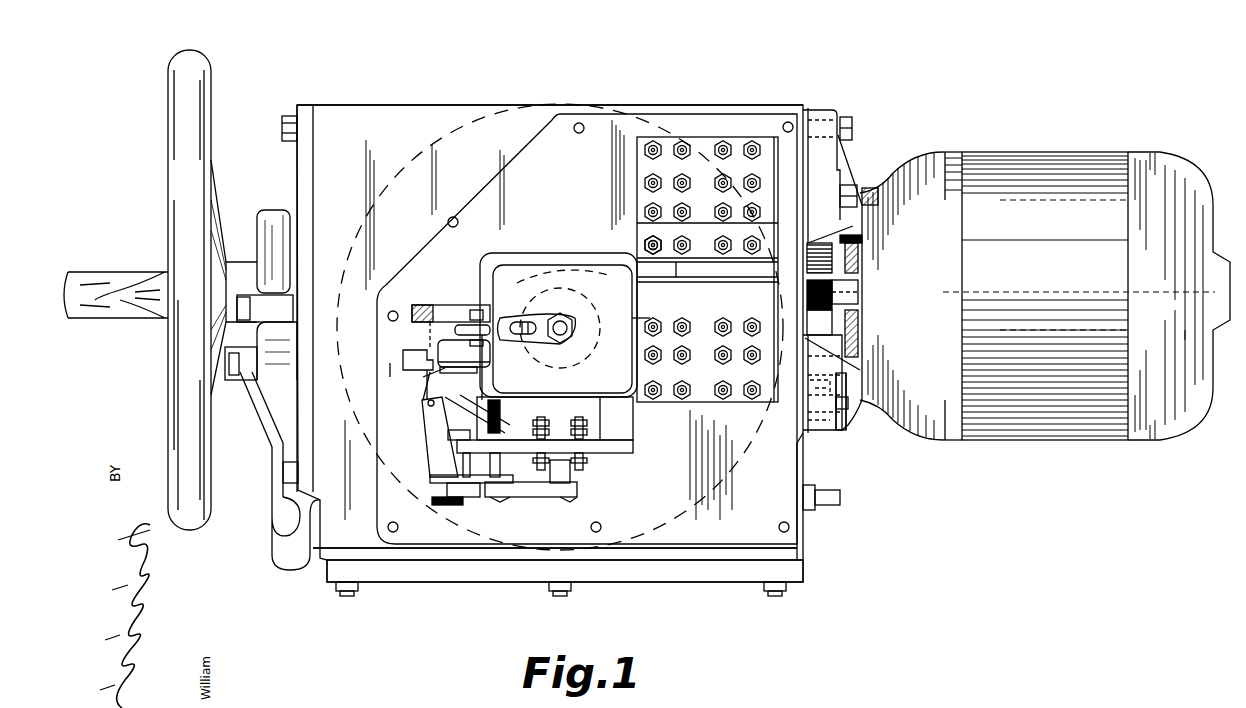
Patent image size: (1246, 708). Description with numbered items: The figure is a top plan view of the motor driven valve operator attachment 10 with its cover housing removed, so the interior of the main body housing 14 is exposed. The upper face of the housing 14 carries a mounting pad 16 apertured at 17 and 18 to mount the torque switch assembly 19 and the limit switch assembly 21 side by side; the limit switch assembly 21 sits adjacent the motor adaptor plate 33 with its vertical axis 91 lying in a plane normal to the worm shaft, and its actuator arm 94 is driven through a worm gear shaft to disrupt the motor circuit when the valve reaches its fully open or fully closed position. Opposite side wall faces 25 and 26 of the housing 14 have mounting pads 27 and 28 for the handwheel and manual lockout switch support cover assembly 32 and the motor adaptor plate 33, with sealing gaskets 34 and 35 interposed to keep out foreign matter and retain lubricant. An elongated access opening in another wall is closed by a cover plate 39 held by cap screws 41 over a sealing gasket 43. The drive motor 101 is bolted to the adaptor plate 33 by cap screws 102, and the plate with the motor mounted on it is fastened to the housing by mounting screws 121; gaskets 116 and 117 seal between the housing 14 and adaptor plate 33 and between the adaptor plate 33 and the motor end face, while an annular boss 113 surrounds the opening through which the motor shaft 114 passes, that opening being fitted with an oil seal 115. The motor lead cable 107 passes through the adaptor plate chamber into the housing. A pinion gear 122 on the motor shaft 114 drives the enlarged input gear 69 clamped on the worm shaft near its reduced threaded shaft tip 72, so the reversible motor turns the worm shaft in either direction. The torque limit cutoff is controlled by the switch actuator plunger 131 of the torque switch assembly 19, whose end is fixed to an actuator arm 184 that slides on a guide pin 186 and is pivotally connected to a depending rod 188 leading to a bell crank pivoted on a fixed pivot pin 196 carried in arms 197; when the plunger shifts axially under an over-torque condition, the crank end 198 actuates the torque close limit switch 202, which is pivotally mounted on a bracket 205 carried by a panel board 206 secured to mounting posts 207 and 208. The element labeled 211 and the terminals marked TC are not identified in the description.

The motor driven valve operator attachment 10 is at (752, 98).
The main body housing 14 is at (470, 106).
The mounting pad 16 is at (495, 205).
The aperture 17 is at (583, 267).
The aperture 18 is at (778, 235).
The torque switch assembly 19 is at (566, 252).
The limit switch assembly 21 is at (650, 318).
The side wall face 25 is at (316, 126).
The side wall face 26 is at (805, 464).
The mounting pad 27 is at (272, 458).
The mounting pad 28 is at (800, 437).
The handwheel and manual lockout switch support cover assembly 32 is at (248, 220).
The motor adaptor plate 33 is at (856, 152).
The sealing gasket 34 is at (304, 110).
The sealing gasket 35 is at (810, 108).
The cover plate 39 is at (692, 575).
The cap screws 41 is at (352, 594).
The sealing gasket 43 is at (752, 560).
The input gear 69 is at (812, 244).
The shaft tip 72 is at (858, 236).
The vertical axis 91 is at (662, 260).
The actuator arm 94 is at (700, 157).
The drive motor 101 is at (1070, 262).
The cap screws 102 is at (855, 188).
The motor lead cable 107 is at (858, 412).
The annular boss 113 is at (858, 265).
The motor shaft 114 is at (858, 297).
The oil seal 115 is at (858, 318).
The gasket 116 is at (808, 420).
The gasket 117 is at (862, 375).
The mounting screws 121 is at (852, 122).
The pinion gear 122 is at (823, 307).
The switch actuator plunger 131 is at (566, 322).
The actuator arm 184 is at (505, 340).
The guide pin 186 is at (525, 323).
The depending rod 188 is at (472, 328).
The fixed pivot pin 196 is at (415, 336).
The arms 197 is at (440, 305).
The bell crank end 198 is at (403, 358).
The torque close limit switch 202 is at (571, 497).
The bracket 205 is at (430, 432).
The panel board 206 is at (632, 446).
The mounting post 207 is at (468, 388).
The mounting post 208 is at (625, 422).
The handwheel 211 is at (172, 167).
The terminal connector TC is at (585, 462).